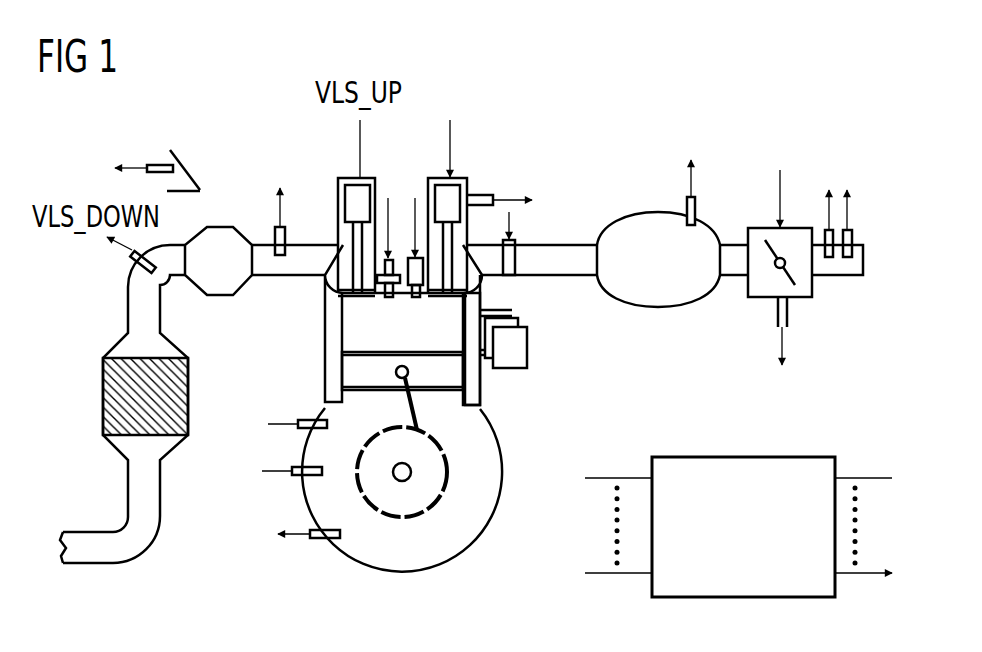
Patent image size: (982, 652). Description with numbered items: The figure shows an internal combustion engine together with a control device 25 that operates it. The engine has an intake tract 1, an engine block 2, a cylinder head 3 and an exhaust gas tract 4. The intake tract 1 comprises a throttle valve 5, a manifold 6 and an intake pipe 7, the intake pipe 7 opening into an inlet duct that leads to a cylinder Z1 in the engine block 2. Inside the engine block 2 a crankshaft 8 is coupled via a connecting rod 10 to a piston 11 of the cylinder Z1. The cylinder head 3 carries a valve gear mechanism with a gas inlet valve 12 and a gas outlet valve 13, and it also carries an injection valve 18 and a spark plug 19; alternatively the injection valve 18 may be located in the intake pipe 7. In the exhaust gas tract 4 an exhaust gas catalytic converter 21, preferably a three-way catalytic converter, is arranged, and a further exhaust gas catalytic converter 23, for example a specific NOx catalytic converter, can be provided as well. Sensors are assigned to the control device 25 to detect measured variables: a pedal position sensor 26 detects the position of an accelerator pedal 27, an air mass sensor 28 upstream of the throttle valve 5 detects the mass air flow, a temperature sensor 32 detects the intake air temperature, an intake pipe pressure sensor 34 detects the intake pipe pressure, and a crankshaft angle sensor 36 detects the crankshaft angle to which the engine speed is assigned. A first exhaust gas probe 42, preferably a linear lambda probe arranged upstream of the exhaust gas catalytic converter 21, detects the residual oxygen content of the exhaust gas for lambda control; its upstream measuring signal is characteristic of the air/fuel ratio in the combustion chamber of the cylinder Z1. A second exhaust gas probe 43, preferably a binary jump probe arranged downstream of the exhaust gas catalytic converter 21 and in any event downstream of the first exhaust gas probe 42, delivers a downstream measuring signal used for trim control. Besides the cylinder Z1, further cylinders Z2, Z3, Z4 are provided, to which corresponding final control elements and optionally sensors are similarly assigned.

The intake tract 1 is at (687, 317).
The engine block 2 is at (307, 325).
The cylinder head 3 is at (468, 150).
The exhaust gas tract 4 is at (125, 322).
The throttle valve 5 is at (760, 235).
The manifold 6 is at (700, 290).
The intake pipe 7 is at (562, 244).
The crankshaft 8 is at (413, 472).
The connecting rod 10 is at (410, 418).
The piston 11 is at (435, 378).
The gas inlet valve 12 is at (447, 294).
The gas outlet valve 13 is at (330, 302).
The injection valve 18 is at (415, 298).
The spark plug 19 is at (389, 298).
The exhaust gas catalytic converter 21 is at (218, 288).
The further exhaust gas catalytic converter 23 is at (177, 403).
The control device 25 is at (780, 457).
The pedal position sensor 26 is at (155, 165).
The accelerator pedal 27 is at (187, 170).
The air mass sensor 28 is at (825, 233).
The temperature sensor 32 is at (852, 233).
The intake pipe pressure sensor 34 is at (687, 205).
The crankshaft angle sensor 36 is at (298, 477).
The first exhaust gas probe 42 is at (285, 232).
The second exhaust gas probe 43 is at (128, 260).
The cylinder Z1 is at (472, 373).
The further cylinder Z2 is at (518, 350).
The further cylinder Z3 is at (518, 322).
The further cylinder Z4 is at (512, 312).